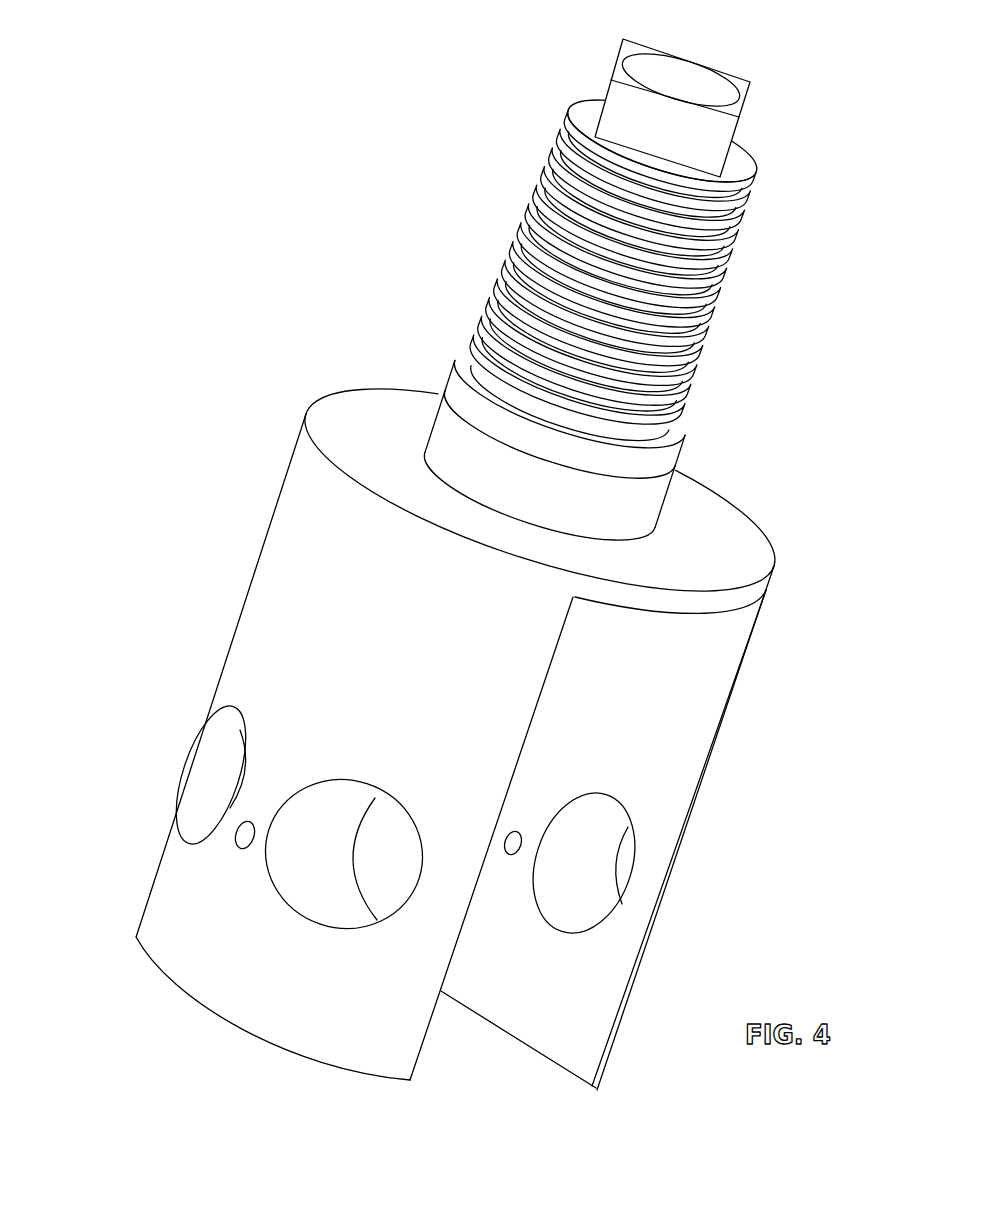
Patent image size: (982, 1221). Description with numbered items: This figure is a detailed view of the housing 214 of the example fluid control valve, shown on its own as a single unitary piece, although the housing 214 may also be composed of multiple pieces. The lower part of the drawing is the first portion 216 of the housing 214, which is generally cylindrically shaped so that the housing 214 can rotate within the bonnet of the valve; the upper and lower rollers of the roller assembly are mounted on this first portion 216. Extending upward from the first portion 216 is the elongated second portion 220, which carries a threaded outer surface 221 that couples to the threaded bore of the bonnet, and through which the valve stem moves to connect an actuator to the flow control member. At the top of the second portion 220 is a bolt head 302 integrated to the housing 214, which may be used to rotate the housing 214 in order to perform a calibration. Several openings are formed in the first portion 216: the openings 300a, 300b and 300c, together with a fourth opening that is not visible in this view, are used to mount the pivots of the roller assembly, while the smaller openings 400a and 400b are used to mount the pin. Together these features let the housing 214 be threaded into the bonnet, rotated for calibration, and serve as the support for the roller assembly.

The housing 214 is at (236, 70).
The first portion 216 is at (273, 577).
The second portion 220 is at (618, 253).
The threaded outer surface 221 is at (715, 320).
The bolt head 302 is at (727, 138).
The opening 300a is at (237, 787).
The opening 300b is at (373, 860).
The opening 300c is at (628, 866).
The opening 400a is at (248, 835).
The opening 400b is at (516, 842).